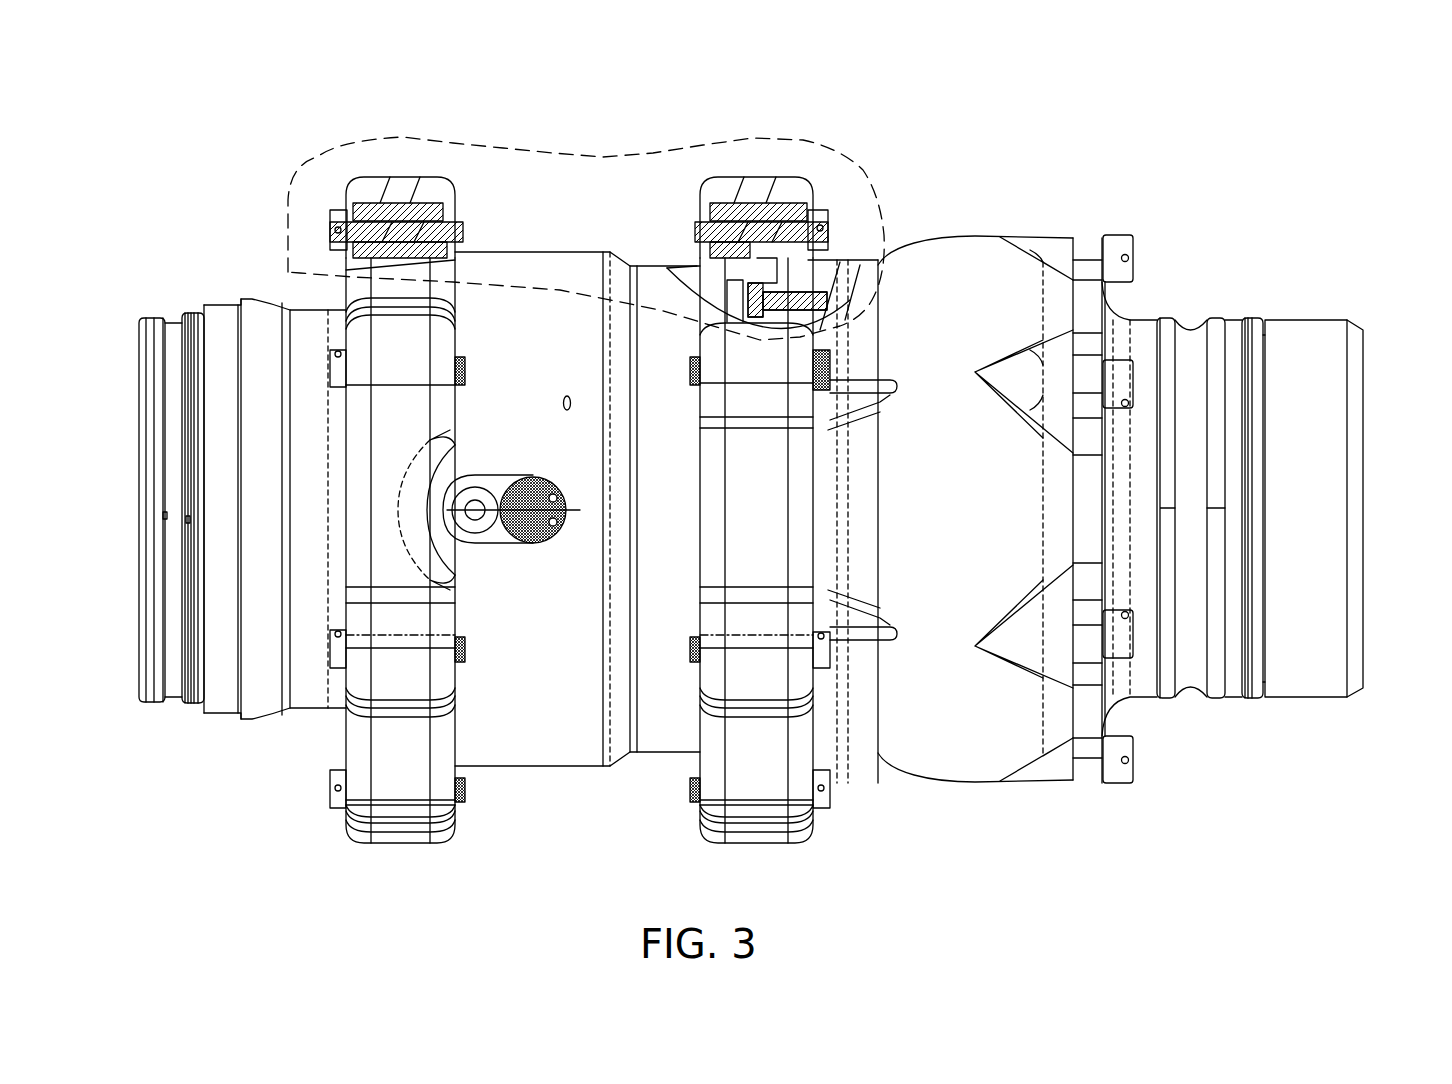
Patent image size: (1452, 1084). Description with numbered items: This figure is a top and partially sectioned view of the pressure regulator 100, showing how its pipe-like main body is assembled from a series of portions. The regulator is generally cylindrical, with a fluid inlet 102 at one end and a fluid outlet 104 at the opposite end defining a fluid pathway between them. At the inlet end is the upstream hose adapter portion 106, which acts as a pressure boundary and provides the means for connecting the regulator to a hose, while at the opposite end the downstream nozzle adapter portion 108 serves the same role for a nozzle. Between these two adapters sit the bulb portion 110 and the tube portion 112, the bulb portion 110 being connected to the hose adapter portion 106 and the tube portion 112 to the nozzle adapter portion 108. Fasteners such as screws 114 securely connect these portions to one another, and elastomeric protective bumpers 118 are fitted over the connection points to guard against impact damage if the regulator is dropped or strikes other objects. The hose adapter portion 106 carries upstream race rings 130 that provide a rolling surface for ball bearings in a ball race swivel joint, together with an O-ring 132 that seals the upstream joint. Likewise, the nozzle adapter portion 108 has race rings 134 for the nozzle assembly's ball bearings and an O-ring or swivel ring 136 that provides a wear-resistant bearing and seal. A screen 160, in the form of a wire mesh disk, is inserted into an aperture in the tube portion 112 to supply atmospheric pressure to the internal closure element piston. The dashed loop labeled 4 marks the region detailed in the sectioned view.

The pressure regulator 100 is at (273, 104).
The section indicator for FIG. 4 is at (549, 150).
The fluid inlet 102 is at (1365, 376).
The fluid outlet 104 is at (139, 372).
The upstream hose adapter portion 106 is at (1242, 300).
The downstream nozzle adapter portion 108 is at (212, 290).
The bulb portion 110 is at (982, 228).
The tube portion 112 is at (559, 787).
The screws 114 is at (1127, 235).
The protective bumpers 118 is at (401, 832).
The upstream race rings 130 is at (1212, 690).
The O-ring 132 is at (1252, 697).
The race rings 134 is at (188, 705).
The O-ring or swivel ring 136 is at (196, 705).
The screen 160 is at (532, 478).